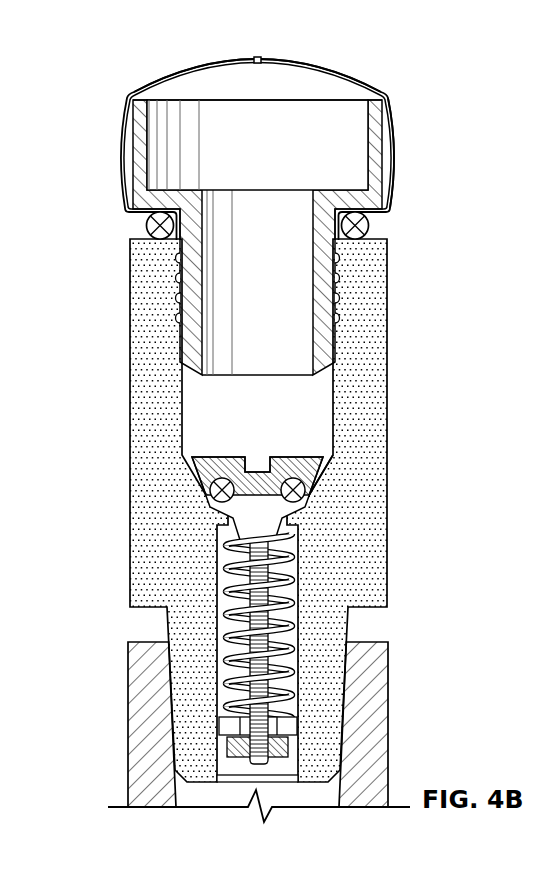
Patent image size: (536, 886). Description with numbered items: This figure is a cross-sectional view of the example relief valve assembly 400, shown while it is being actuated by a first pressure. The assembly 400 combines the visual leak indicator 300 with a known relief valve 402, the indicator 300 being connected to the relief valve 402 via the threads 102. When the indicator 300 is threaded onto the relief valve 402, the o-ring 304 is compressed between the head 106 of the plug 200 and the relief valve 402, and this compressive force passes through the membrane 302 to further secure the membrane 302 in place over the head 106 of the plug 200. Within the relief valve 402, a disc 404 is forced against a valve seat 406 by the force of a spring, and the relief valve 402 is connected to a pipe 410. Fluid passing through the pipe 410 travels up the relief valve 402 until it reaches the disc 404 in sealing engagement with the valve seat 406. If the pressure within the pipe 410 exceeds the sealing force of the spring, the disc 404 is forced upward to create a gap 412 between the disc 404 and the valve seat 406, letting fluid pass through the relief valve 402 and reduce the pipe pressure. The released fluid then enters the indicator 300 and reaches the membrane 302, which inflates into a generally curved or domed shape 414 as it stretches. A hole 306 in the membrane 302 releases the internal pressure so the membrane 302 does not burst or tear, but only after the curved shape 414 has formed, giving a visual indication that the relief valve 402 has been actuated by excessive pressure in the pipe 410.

The relief valve assembly 400 is at (89, 59).
The curved or domed shape 414 is at (206, 60).
The hole 306 is at (258, 59).
The visual leak indicator 300 is at (407, 103).
The head 106 is at (134, 167).
The membrane 302 is at (390, 187).
The o-ring 304 is at (371, 222).
The plug 200 is at (188, 244).
The threads 102 is at (338, 293).
The disc 404 is at (207, 457).
The valve seat 406 is at (213, 495).
The gap 412 is at (328, 487).
The relief valve 402 is at (422, 458).
The pipe 410 is at (377, 717).